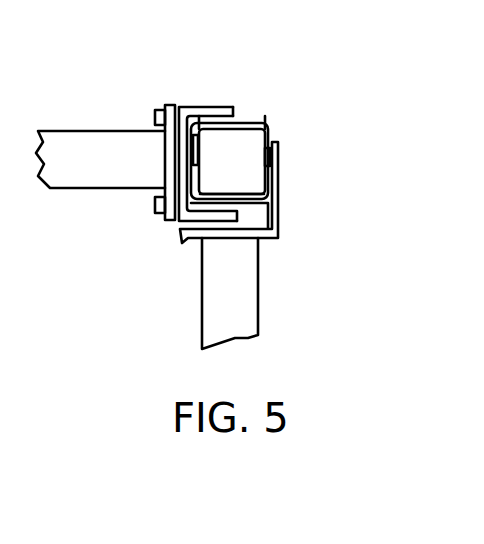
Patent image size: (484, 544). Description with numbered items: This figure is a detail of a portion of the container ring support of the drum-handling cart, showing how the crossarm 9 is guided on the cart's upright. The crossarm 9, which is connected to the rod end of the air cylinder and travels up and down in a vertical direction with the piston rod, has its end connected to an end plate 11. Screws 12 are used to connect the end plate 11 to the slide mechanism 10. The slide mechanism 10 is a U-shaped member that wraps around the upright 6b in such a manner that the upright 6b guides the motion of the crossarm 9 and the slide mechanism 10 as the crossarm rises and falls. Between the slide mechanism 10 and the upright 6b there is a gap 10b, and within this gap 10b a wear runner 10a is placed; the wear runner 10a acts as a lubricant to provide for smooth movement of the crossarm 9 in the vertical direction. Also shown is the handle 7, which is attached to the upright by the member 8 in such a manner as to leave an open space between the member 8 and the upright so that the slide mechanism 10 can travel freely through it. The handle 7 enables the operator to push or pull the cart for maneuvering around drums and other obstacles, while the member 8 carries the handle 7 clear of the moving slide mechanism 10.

The crossarm 9 is at (108, 131).
The end plate 11 is at (171, 106).
The screw 12 is at (155, 207).
The slide mechanism 10 is at (198, 107).
The wear runner 10a is at (234, 120).
The gap 10b is at (196, 202).
The upright 6b is at (269, 125).
The member 8 is at (180, 239).
The handle 7 is at (258, 278).